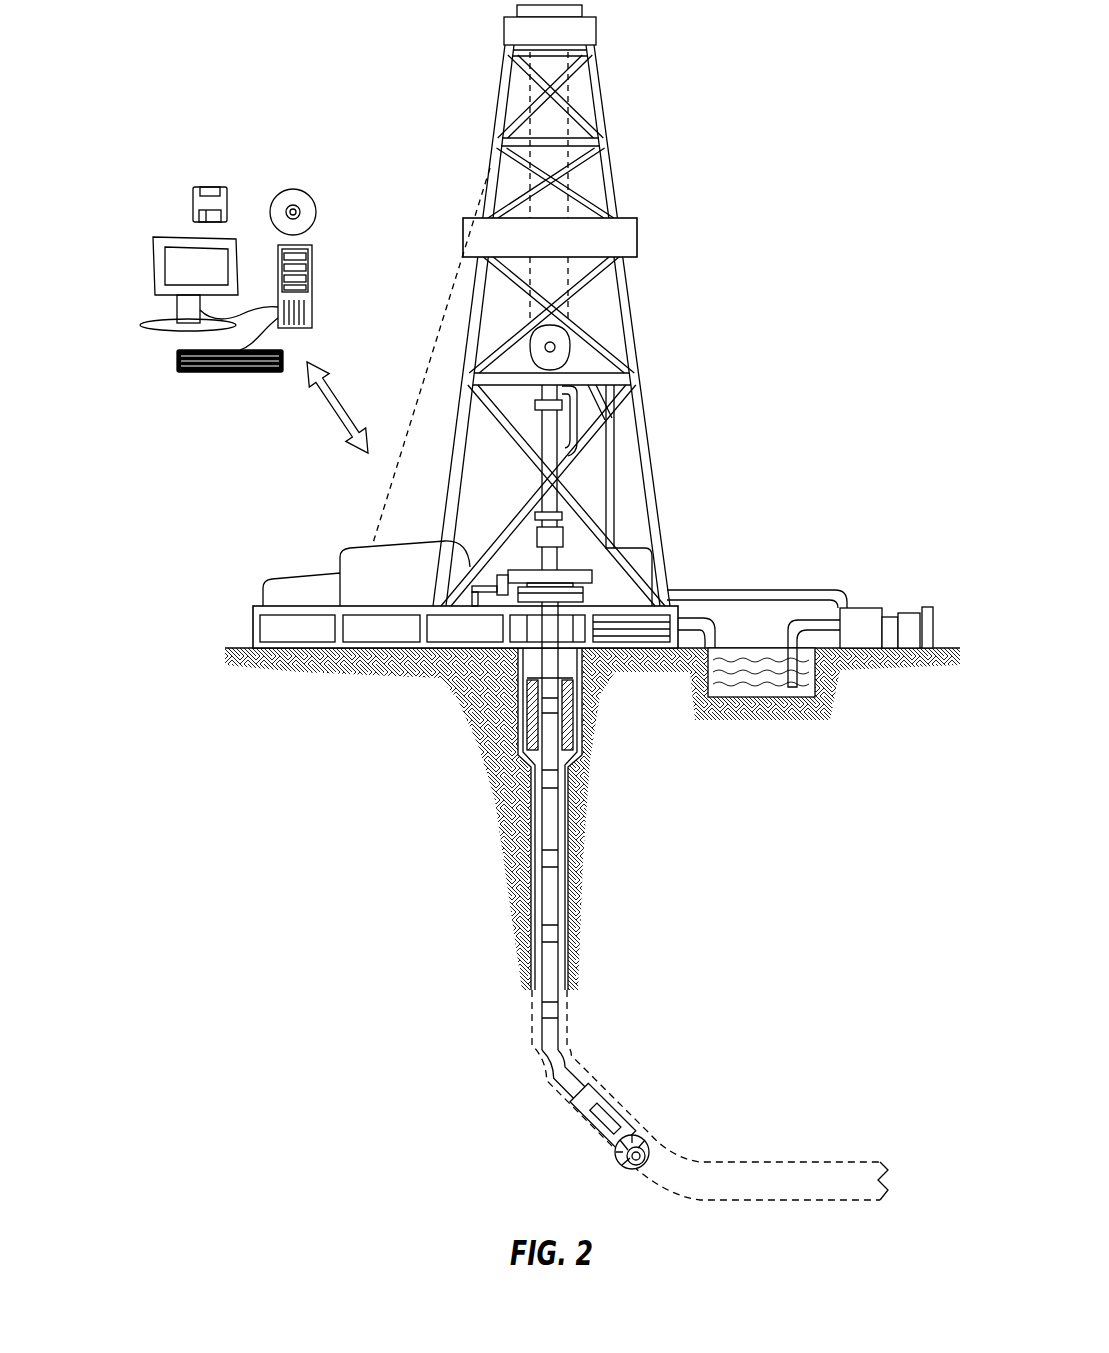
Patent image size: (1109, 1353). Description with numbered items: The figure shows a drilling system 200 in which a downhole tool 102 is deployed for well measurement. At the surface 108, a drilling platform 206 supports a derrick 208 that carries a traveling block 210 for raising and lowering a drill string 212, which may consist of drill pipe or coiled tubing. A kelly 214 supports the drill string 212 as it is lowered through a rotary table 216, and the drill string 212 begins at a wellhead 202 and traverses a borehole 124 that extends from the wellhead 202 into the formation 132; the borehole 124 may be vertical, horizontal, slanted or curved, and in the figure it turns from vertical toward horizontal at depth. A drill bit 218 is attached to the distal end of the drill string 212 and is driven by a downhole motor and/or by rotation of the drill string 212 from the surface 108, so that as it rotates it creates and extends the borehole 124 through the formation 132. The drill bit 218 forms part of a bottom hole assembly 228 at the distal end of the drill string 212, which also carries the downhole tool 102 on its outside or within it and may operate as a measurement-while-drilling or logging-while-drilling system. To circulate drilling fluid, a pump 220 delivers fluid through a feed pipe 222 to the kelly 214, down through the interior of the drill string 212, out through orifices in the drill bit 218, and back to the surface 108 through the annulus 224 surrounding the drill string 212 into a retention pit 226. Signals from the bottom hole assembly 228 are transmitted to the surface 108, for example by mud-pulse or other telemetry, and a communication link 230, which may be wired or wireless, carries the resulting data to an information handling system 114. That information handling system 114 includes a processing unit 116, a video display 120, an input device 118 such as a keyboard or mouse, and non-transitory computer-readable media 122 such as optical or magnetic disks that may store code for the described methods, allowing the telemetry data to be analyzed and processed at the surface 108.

The drilling system 200 is at (850, 104).
The information handling system 114 is at (156, 174).
The non-transitory computer-readable media 122 is at (291, 190).
The video display 120 is at (158, 275).
The processing unit 116 is at (312, 262).
The input device 118 is at (188, 374).
The communication link 230 is at (327, 413).
The derrick 208 is at (608, 152).
The traveling block 210 is at (572, 348).
The kelly 214 is at (552, 432).
The rotary table 216 is at (583, 567).
The wellhead 202 is at (600, 592).
The feed pipe 222 is at (790, 590).
The pump 220 is at (870, 608).
The surface 108 is at (950, 648).
The drilling platform 206 is at (253, 626).
The retention pit 226 is at (768, 690).
The drill string 212 is at (557, 836).
The borehole 124 is at (566, 852).
The annulus 224 is at (530, 855).
The formation 132 is at (795, 944).
The bottom hole assembly 228 is at (556, 1113).
The downhole tool 102 is at (612, 1117).
The drill bit 218 is at (649, 1146).